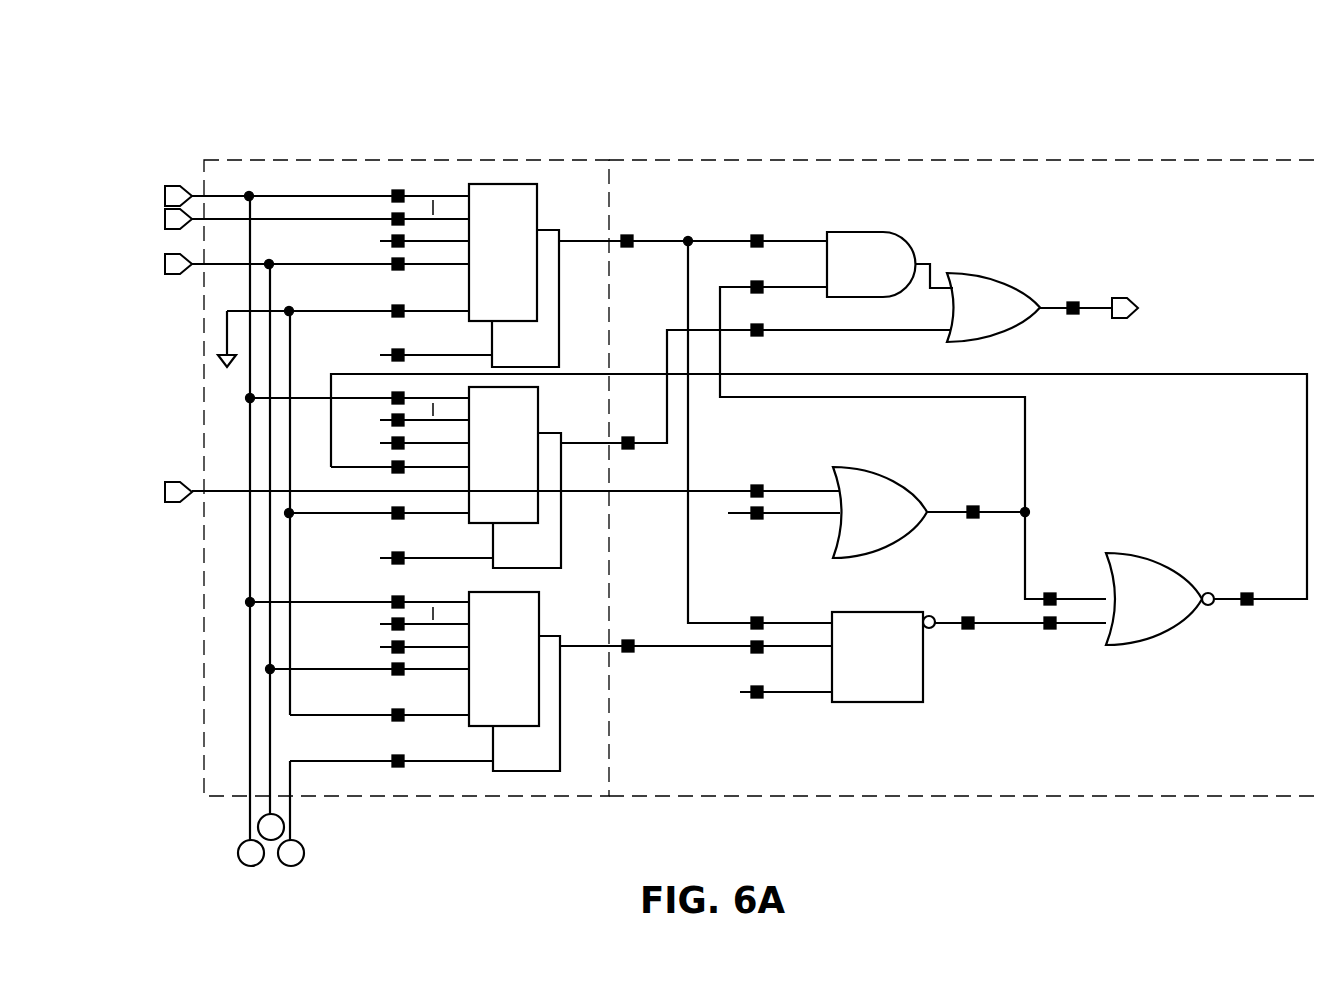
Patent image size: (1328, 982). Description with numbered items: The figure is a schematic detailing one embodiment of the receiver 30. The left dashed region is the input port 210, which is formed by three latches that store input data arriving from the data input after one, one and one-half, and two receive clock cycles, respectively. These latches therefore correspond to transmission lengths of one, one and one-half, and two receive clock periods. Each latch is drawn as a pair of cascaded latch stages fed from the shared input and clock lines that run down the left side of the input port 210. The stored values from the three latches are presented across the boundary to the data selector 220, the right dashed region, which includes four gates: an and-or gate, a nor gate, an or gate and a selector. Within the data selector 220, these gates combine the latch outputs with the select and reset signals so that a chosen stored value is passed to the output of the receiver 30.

The receiver 30 is at (1208, 102).
The input port 210 is at (325, 159).
The data selector 220 is at (915, 159).